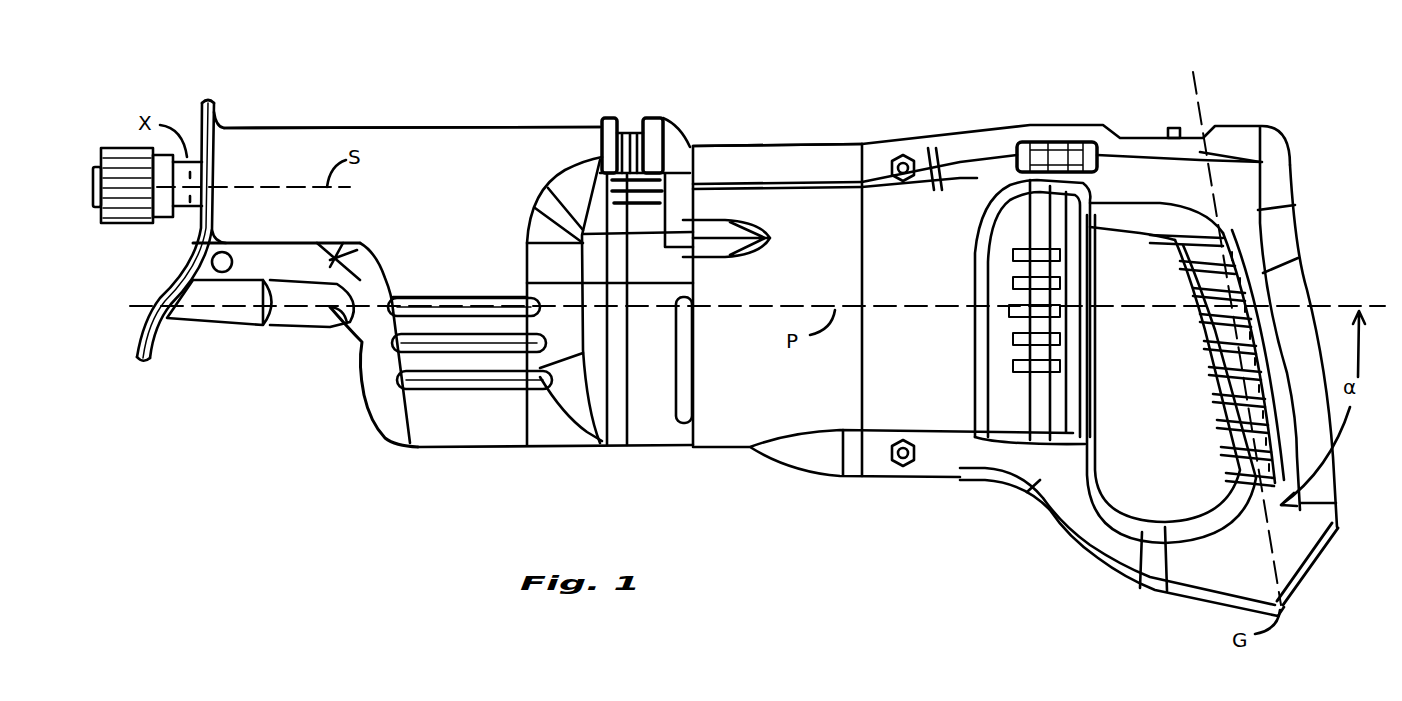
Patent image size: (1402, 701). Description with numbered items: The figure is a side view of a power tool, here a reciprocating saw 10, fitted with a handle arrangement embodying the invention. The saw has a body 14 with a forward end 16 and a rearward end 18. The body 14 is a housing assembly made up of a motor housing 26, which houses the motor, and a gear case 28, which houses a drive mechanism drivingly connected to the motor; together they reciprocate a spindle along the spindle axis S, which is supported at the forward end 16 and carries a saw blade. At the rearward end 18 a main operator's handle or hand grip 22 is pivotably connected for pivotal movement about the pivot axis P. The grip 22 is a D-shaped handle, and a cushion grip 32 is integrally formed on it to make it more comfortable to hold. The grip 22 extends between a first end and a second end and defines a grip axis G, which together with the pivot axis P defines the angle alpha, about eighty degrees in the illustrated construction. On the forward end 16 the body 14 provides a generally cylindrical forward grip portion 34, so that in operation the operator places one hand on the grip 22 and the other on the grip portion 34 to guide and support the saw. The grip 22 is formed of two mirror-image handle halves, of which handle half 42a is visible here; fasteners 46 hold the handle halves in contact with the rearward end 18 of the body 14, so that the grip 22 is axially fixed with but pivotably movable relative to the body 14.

The reciprocating saw 10 is at (809, 50).
The body 14 is at (752, 153).
The forward end 16 is at (468, 127).
The rearward end 18 is at (852, 121).
The hand grip 22 is at (1090, 535).
The motor housing 26 is at (740, 432).
The gear case 28 is at (507, 427).
The cushion grip 32 is at (1277, 188).
The forward grip portion 34 is at (480, 266).
The handle half 42a is at (1210, 592).
The fasteners 46 is at (910, 158).